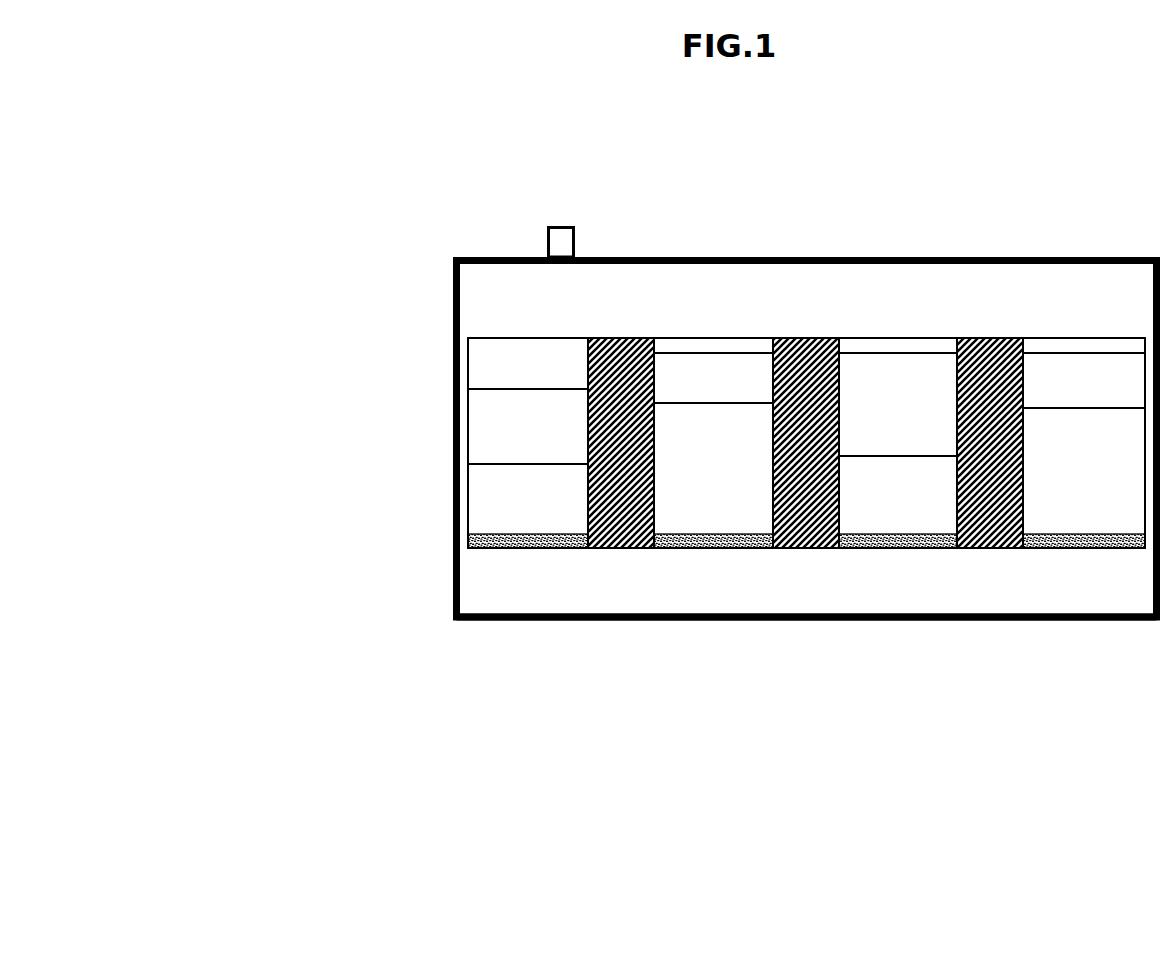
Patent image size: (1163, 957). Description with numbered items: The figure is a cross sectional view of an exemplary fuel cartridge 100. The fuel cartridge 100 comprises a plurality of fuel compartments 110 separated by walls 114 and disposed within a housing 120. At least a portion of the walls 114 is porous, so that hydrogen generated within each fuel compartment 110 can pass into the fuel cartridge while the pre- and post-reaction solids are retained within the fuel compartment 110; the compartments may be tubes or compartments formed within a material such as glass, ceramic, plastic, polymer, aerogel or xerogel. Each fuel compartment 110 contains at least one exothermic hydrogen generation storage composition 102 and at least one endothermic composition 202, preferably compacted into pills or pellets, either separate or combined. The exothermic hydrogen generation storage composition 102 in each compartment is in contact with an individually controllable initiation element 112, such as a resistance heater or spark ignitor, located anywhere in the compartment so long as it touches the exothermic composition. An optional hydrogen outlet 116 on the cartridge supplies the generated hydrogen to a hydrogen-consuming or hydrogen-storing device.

The fuel cartridge 100 is at (869, 217).
The exothermic hydrogen generation storage composition 102 is at (806, 459).
The fuel compartment 110 is at (476, 355).
The initiation element 112 is at (467, 543).
The walls 114 is at (598, 495).
The hydrogen outlet 116 is at (548, 247).
The housing 120 is at (868, 622).
The endothermic composition 202 is at (806, 401).